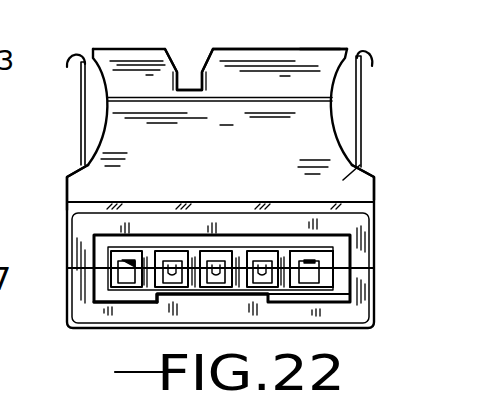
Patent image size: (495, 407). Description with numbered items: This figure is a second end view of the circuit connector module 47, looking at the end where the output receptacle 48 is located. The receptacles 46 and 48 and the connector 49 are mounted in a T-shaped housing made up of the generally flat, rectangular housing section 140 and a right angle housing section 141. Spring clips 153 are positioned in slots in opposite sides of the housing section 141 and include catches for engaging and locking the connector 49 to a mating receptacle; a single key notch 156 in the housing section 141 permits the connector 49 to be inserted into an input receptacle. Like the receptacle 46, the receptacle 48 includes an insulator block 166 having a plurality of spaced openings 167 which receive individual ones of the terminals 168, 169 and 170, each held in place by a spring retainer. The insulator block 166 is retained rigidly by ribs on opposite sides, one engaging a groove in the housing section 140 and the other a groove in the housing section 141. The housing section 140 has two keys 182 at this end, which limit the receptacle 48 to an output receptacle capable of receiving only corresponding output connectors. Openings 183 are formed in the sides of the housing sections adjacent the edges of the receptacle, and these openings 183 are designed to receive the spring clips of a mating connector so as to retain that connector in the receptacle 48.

The housing section 140 is at (374, 286).
The right angle housing section 141 is at (352, 166).
The circuit connector module 47 is at (69, 203).
The spring clips 153 is at (80, 109).
The key notch 156 is at (187, 68).
The connector 49 is at (238, 48).
The openings 183 is at (323, 24).
The receptacle 46 is at (392, 2).
The spaced openings 167 is at (175, 262).
The terminal 170 is at (176, 262).
The terminal 169 is at (217, 262).
The terminal 168 is at (263, 262).
The insulator block 166 is at (318, 289).
The keys 182 is at (188, 296).
The receptacle 48 is at (133, 292).